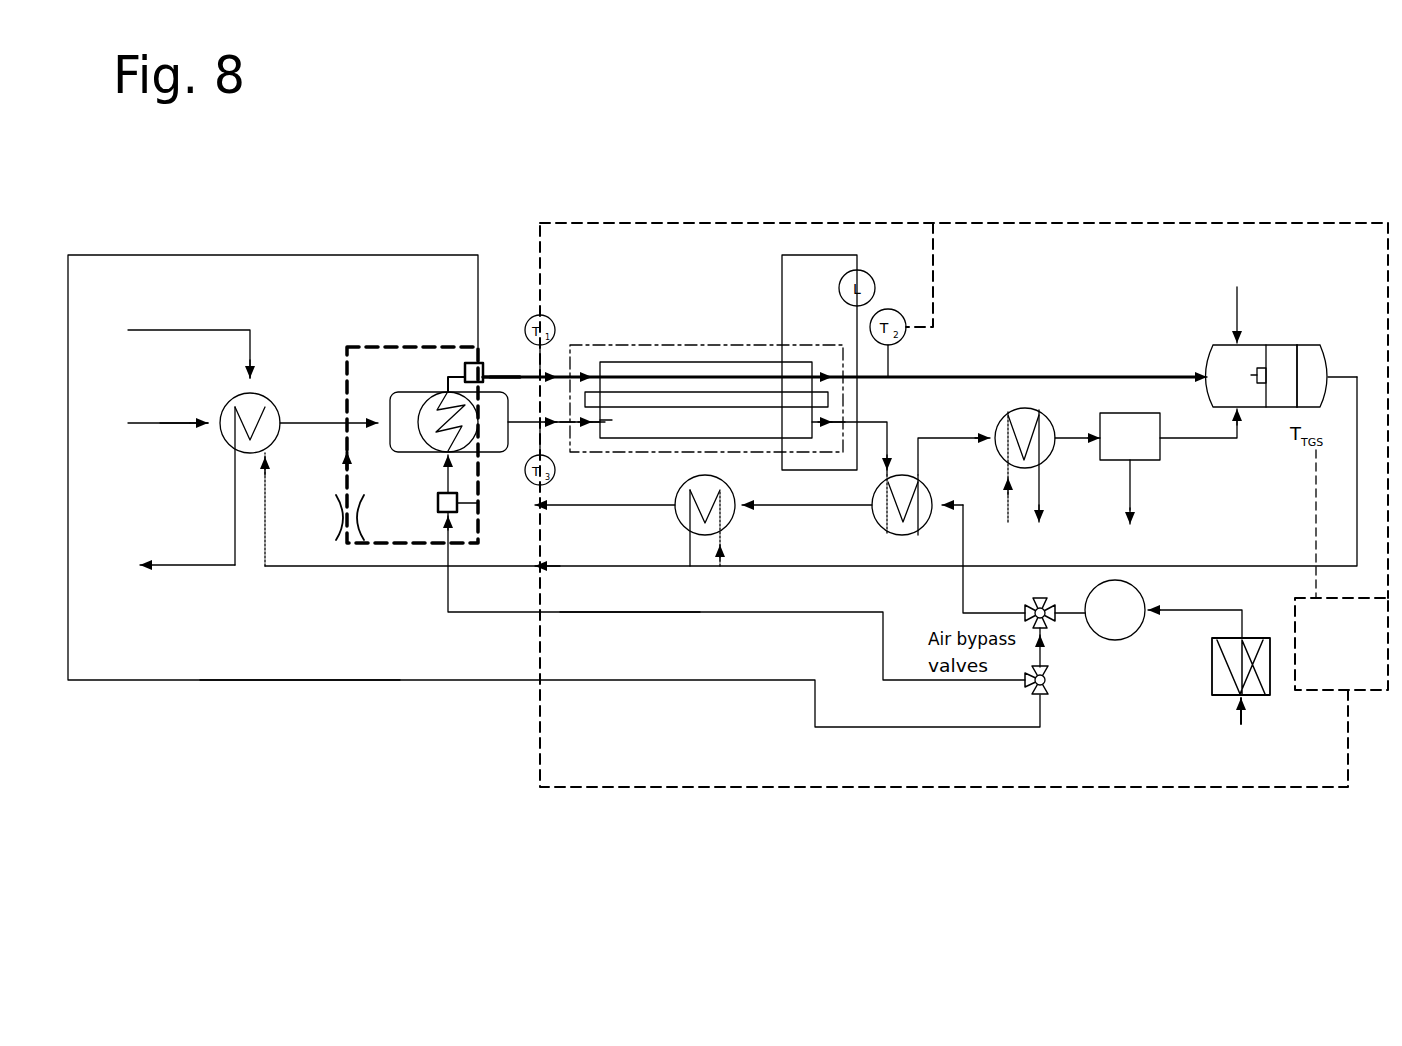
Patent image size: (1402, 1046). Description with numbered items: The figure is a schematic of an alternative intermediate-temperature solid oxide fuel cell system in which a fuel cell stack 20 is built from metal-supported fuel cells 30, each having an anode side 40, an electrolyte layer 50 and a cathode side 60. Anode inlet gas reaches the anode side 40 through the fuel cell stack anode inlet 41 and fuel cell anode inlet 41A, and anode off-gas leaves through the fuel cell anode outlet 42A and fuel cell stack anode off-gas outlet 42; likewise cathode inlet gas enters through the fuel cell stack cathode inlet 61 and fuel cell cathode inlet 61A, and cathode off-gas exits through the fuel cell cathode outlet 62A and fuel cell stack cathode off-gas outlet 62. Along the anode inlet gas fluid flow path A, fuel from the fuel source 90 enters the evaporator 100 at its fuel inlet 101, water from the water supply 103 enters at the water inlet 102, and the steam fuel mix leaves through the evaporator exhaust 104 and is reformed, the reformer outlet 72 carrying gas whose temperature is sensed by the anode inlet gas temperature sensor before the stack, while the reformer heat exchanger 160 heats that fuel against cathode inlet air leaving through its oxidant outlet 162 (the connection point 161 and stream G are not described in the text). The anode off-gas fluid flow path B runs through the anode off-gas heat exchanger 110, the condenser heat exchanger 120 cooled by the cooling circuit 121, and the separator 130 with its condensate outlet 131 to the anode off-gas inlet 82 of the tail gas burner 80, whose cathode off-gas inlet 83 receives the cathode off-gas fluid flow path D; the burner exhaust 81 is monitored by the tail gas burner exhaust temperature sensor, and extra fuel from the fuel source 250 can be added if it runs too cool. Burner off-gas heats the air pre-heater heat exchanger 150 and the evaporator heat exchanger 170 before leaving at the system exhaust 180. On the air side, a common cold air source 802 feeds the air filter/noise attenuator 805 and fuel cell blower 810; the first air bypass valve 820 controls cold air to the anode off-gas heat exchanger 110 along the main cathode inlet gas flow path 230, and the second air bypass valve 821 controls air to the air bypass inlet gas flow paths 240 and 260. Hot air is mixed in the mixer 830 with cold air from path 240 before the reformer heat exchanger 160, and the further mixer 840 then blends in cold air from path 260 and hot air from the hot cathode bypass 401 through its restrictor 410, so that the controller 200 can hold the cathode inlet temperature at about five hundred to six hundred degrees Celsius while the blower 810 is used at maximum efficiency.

The fuel cell stack 20 is at (707, 345).
The fuel cell 30 is at (750, 348).
The anode side 40 is at (687, 420).
The fuel cell stack anode inlet 41 is at (568, 425).
The fuel cell anode inlet 41A is at (596, 425).
The fuel cell stack anode off-gas outlet 42 is at (845, 427).
The fuel cell anode outlet 42A is at (815, 430).
The electrolyte layer 50 is at (640, 400).
The cathode side 60 is at (615, 377).
The fuel cell stack cathode inlet 61 is at (578, 373).
The fuel cell cathode inlet 61A is at (605, 372).
The fuel cell stack cathode off-gas outlet 62 is at (840, 372).
The fuel cell cathode outlet 62A is at (815, 375).
The reformer outlet 72 is at (497, 373).
The tail gas burner 80 is at (1213, 345).
The tail gas burner exhaust 81 is at (1313, 360).
The anode off-gas inlet 82 is at (1238, 410).
The cathode off-gas inlet 83 is at (1207, 368).
The fuel source 90 is at (148, 422).
The evaporator 100 is at (273, 397).
The fuel inlet 101 is at (217, 417).
The water inlet 102 is at (242, 385).
The water supply 103 is at (167, 349).
The evaporator exhaust 104 is at (290, 437).
The anode off-gas heat exchanger 110 is at (873, 518).
The condenser heat exchanger 120 is at (1045, 458).
The cooling circuit 121 is at (1008, 481).
The separator 130 is at (1146, 434).
The separator condensate outlet 131 is at (1132, 506).
The air pre-heater heat exchanger 150 is at (680, 518).
The reformer heat exchanger 160 is at (438, 403).
The heat exchanger inlet 161 is at (447, 460).
The reformer heat exchanger oxidant outlet 162 is at (446, 390).
The evaporator heat exchanger 170 is at (230, 427).
The fuel cell system exhaust 180 is at (159, 562).
The controller 200 is at (1382, 690).
The main cathode inlet gas flow path 230 is at (963, 585).
The air bypass inlet gas flow path 240 is at (608, 612).
The fuel source 250 is at (1237, 304).
The air bypass inlet gas flow path 260 is at (290, 680).
The hot cathode bypass 401 is at (393, 542).
The restrictor 410 is at (337, 528).
The cold air source 802 is at (1243, 715).
The air filter/noise attenuator 805 is at (1272, 690).
The fuel cell blower 810 is at (1165, 597).
The first air bypass valve 820 is at (1048, 622).
The second air bypass valve 821 is at (1025, 688).
The mixer 830 is at (440, 522).
The further mixer 840 is at (468, 364).
The anode inlet gas fluid flow path A is at (160, 418).
The anode off-gas fluid flow path B is at (895, 435).
The cathode off-gas fluid flow path D is at (908, 375).
The cathode feed gas G is at (490, 372).